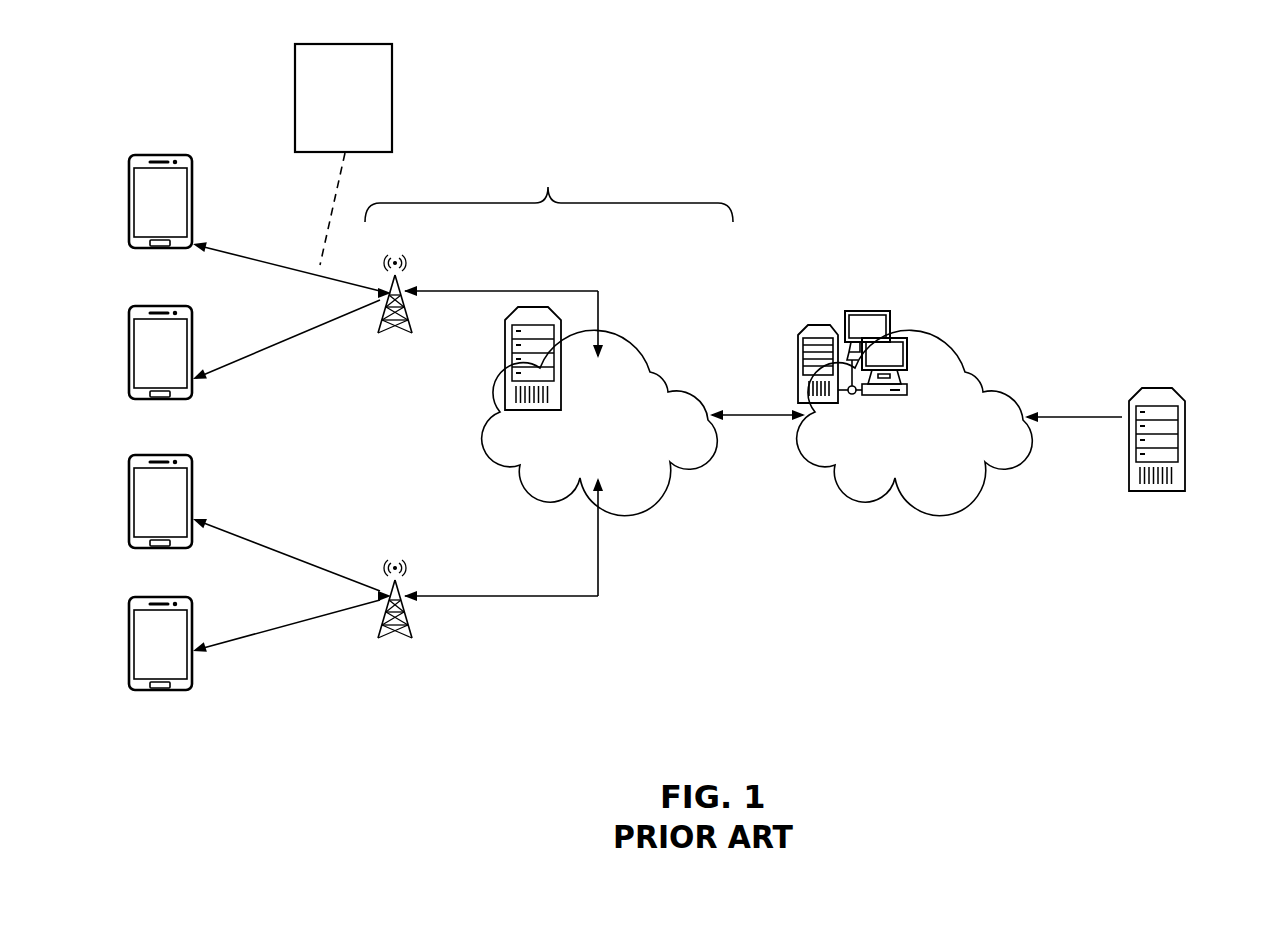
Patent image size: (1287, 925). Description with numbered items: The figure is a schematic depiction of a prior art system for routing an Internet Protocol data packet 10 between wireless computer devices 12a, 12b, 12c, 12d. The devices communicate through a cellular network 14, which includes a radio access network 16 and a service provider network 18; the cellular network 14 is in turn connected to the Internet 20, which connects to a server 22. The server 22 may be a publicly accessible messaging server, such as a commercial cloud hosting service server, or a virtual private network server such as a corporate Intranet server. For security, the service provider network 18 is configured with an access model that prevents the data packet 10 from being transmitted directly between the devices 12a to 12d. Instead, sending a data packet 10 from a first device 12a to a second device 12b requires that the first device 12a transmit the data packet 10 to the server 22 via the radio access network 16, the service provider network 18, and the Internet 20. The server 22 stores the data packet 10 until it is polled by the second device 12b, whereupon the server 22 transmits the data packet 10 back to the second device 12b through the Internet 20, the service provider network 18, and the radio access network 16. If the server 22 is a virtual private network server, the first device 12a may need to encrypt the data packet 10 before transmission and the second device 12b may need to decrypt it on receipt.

The Internet Protocol (IP) data packet 10 is at (392, 50).
The wireless computer device 12a is at (192, 189).
The wireless computer device 12b is at (192, 340).
The wireless computer device 12c is at (192, 470).
The wireless computer device 12d is at (192, 612).
The cellular network 14 is at (549, 190).
The radio access network (RAN) 16 is at (403, 330).
The service provider network (SPN) 18 is at (662, 377).
The Internet 20 is at (975, 372).
The server 22 is at (1170, 388).